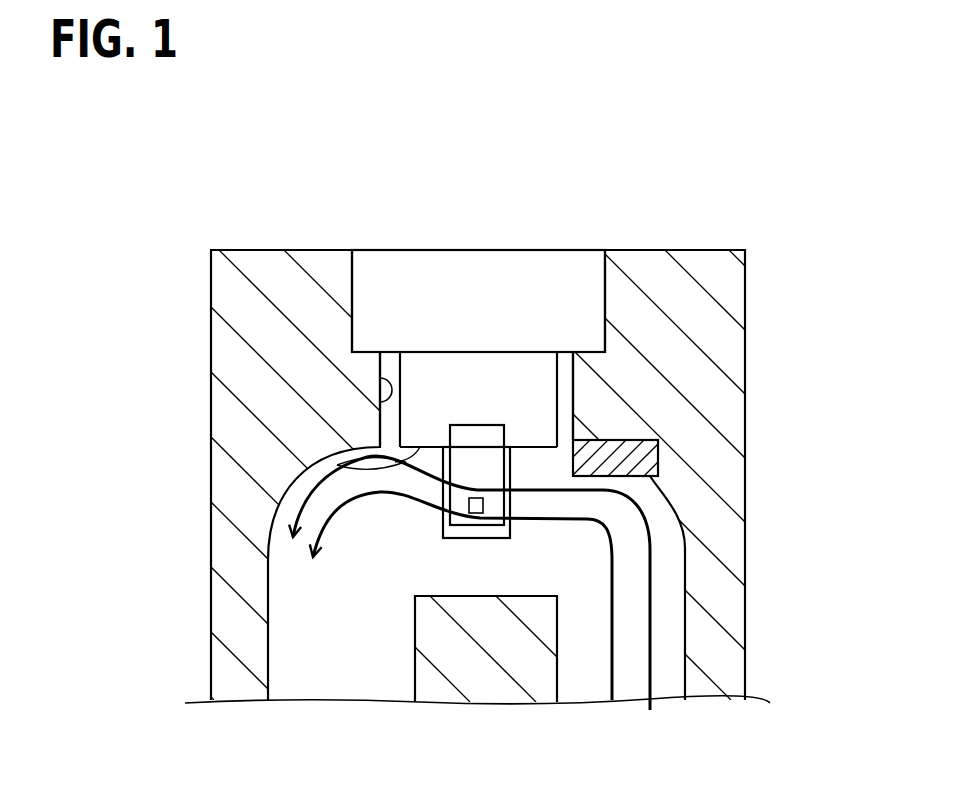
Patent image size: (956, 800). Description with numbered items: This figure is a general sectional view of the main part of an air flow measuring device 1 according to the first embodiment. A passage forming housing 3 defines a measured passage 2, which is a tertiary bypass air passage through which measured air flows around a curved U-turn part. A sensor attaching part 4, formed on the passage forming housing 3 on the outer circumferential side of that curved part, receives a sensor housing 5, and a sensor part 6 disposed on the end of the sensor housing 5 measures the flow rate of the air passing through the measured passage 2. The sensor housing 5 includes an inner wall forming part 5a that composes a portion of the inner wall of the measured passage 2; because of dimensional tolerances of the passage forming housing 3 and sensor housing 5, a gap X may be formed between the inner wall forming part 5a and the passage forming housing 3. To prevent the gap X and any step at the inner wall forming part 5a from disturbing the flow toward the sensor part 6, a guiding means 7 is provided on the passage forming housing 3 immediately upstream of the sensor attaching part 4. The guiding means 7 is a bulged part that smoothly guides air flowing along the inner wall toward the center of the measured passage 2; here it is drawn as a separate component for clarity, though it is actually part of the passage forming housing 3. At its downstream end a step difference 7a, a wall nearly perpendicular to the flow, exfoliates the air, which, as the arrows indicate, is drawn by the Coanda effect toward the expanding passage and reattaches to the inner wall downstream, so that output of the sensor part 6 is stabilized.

The air flow measuring device 1 is at (730, 217).
The measured passage 2 is at (596, 661).
The passage forming housing 3 is at (287, 280).
The sensor attaching part 4 is at (380, 407).
The sensor housing 5 is at (417, 287).
The inner wall forming part 5a is at (338, 462).
The sensor part 6 is at (469, 505).
The guiding means 7 is at (613, 477).
The step difference 7a is at (573, 462).
The gap X is at (565, 418).